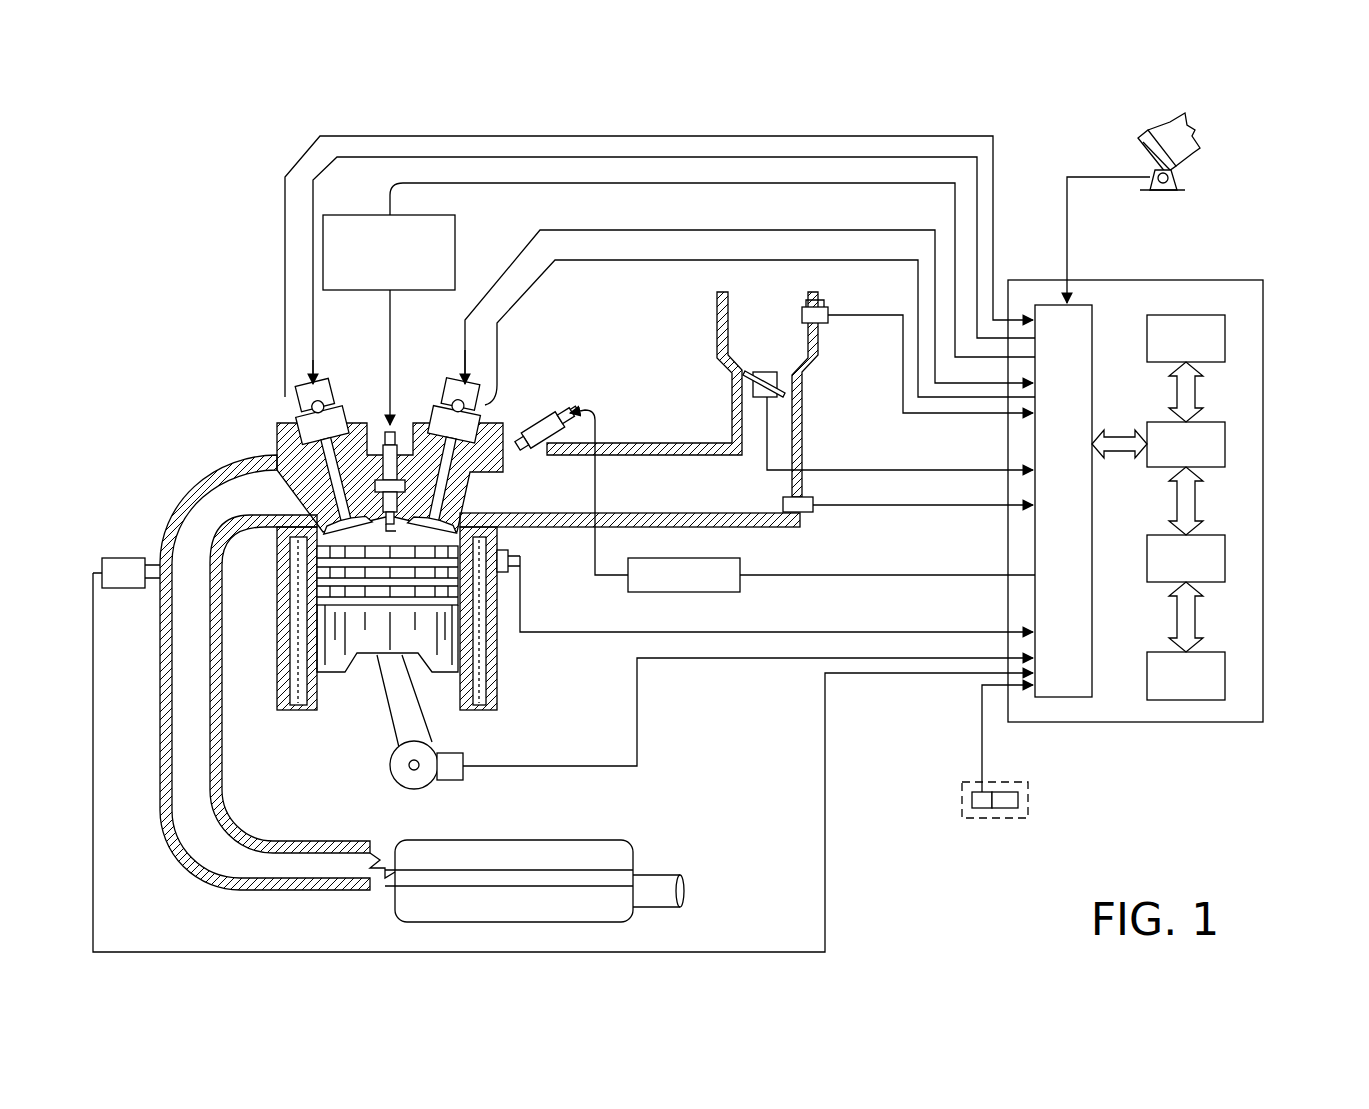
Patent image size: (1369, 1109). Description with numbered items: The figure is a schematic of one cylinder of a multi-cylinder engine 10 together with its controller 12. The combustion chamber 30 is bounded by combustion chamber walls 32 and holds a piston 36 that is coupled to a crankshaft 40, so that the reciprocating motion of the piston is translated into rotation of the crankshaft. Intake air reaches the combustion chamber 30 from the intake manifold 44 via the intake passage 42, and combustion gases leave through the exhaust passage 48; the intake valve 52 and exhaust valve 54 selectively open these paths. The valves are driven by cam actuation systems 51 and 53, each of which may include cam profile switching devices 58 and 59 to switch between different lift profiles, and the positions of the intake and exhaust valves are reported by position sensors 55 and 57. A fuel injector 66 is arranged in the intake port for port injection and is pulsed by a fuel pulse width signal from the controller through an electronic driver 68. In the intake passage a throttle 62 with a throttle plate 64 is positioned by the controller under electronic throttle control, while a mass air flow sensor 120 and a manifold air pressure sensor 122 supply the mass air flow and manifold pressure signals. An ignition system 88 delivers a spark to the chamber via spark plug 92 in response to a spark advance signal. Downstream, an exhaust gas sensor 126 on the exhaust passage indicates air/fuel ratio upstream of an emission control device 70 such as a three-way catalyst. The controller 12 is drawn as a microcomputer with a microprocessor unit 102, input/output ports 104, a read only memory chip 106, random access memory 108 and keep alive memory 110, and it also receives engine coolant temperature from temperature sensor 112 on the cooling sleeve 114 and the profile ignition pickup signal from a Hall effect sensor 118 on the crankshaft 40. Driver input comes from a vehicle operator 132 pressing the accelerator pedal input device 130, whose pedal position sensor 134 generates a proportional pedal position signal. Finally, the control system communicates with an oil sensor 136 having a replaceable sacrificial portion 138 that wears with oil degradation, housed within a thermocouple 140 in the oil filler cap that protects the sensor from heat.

The engine 10 is at (203, 371).
The controller 12 is at (1255, 282).
The combustion chamber 30 is at (387, 537).
The combustion chamber walls 32 is at (327, 690).
The piston 36 is at (392, 643).
The crankshaft 40 is at (403, 790).
The intake passage 42 is at (776, 342).
The intake manifold 44 is at (677, 500).
The exhaust passage 48 is at (231, 505).
The cam actuation system 51 is at (458, 398).
The intake valve 52 is at (434, 508).
The cam actuation system 53 is at (322, 396).
The exhaust valve 54 is at (277, 472).
The position sensor 55 is at (480, 408).
The position sensor 57 is at (298, 408).
The cam profile switching device 58 is at (340, 428).
The cam profile switching device 59 is at (486, 440).
The throttle 62 is at (779, 377).
The throttle plate 64 is at (745, 376).
The fuel injector 66 is at (533, 427).
The electronic driver 68 is at (660, 592).
The emission control device 70 is at (590, 845).
The ignition system 88 is at (333, 215).
The spark plug 92 is at (402, 452).
The microprocessor unit 102 is at (1225, 442).
The input/output ports 104 is at (1092, 312).
The read only memory chip 106 is at (1225, 335).
The random access memory 108 is at (1225, 555).
The keep alive memory 110 is at (1225, 673).
The temperature sensor 112 is at (518, 565).
The cooling sleeve 114 is at (480, 655).
The Hall effect sensor 118 is at (447, 783).
The mass air flow sensor 120 is at (820, 305).
The manifold air pressure sensor 122 is at (804, 513).
The exhaust gas sensor 126 is at (102, 560).
The input device 130 is at (1140, 150).
The vehicle operator 132 is at (1195, 132).
The pedal position sensor 134 is at (1180, 177).
The oil sensor 136 is at (972, 795).
The sacrificial portion 138 is at (1018, 805).
The thermocouple 140 is at (998, 790).